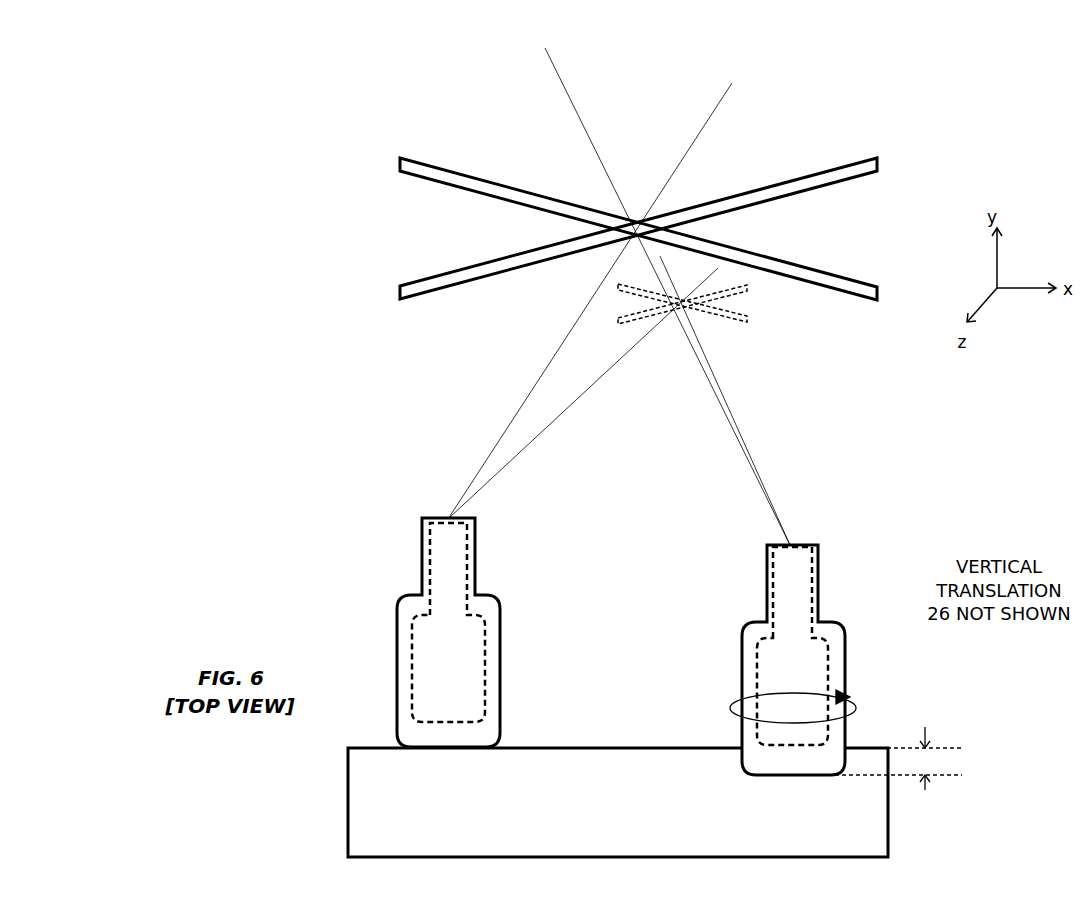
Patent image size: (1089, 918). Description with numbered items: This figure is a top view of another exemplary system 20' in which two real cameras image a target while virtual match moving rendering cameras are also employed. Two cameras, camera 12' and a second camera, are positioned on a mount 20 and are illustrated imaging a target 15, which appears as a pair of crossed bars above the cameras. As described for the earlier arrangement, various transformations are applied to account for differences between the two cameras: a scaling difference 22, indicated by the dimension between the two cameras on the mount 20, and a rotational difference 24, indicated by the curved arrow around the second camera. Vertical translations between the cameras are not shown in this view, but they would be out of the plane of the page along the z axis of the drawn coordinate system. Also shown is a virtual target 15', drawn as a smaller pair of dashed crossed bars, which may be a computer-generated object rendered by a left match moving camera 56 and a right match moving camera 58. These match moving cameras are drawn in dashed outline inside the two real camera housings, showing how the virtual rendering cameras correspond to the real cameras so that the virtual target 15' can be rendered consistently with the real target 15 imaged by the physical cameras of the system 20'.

The target 15 is at (640, 229).
The virtual target 15' is at (697, 317).
The mount 20 is at (618, 788).
The system 20' is at (264, 529).
The camera 12' is at (471, 632).
The left match moving camera 56 is at (483, 670).
The right match moving camera 58 is at (828, 668).
The rotational difference 24 is at (860, 703).
The scaling difference 22 is at (936, 757).